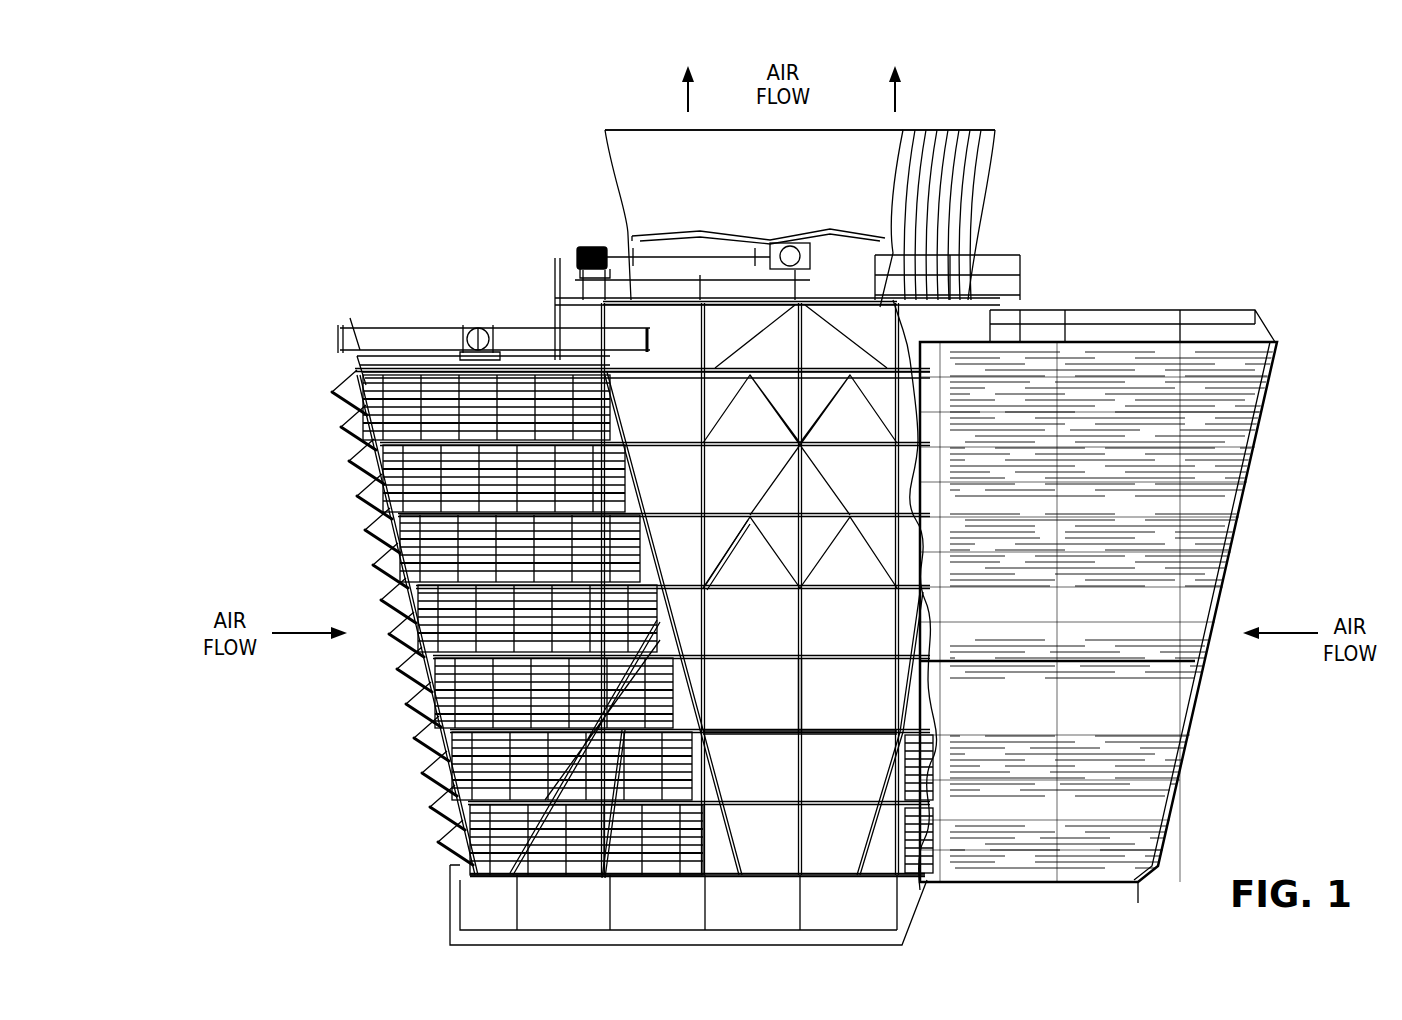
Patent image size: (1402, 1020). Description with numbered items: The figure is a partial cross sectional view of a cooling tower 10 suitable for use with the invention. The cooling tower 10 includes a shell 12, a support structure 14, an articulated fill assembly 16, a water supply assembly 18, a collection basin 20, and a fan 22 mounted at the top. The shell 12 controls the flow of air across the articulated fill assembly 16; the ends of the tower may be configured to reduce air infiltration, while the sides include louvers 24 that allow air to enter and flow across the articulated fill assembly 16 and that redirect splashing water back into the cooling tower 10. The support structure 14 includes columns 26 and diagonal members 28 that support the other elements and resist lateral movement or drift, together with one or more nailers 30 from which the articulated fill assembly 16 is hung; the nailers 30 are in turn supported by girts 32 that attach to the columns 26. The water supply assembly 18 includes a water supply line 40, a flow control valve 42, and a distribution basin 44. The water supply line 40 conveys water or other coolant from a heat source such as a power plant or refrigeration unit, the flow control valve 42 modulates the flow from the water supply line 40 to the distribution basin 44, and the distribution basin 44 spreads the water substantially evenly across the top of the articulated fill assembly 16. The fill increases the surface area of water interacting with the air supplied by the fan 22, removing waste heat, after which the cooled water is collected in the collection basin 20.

The cooling tower 10 is at (1097, 101).
The shell 12 is at (1258, 432).
The support structure 14 is at (828, 600).
The articulated fill assembly 16 is at (438, 760).
The water supply assembly 18 is at (258, 154).
The collection basin 20 is at (465, 901).
The fan 22 is at (703, 230).
The louvers 24 is at (352, 472).
The columns 26 is at (803, 702).
The diagonal members 28 is at (728, 548).
The nailer 30 is at (545, 802).
The girts 32 is at (818, 802).
The water supply line 40 is at (400, 328).
The flow control valve 42 is at (478, 330).
The distribution basin 44 is at (400, 358).